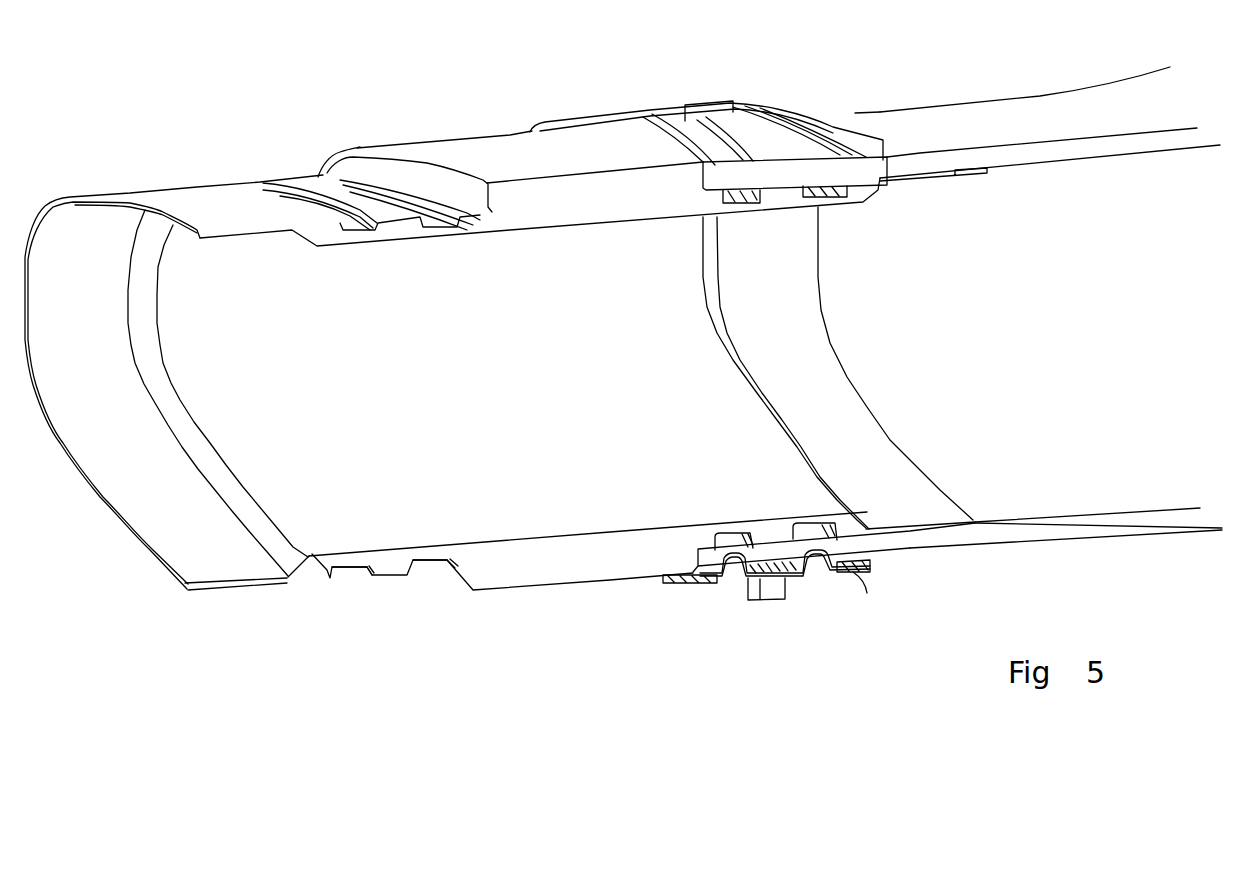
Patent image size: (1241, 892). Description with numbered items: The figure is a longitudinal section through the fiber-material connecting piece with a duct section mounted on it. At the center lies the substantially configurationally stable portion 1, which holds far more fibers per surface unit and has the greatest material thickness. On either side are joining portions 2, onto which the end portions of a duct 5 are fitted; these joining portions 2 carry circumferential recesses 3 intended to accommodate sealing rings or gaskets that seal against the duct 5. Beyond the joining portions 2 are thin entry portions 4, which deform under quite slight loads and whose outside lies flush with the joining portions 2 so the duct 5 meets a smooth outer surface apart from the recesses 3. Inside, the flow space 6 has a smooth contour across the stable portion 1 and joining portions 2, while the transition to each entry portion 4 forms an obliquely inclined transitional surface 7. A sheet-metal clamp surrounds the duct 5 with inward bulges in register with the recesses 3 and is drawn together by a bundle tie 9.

The substantially configurationally stable portion 1 is at (580, 213).
The joining portion 2 is at (312, 570).
The circumferential recess 3 is at (349, 570).
The entry portion 4 is at (133, 523).
The duct 5 is at (998, 123).
The flow space 6 is at (478, 393).
The obliquely inclined transitional surface 7 is at (170, 405).
The bundle tie 9 is at (772, 590).